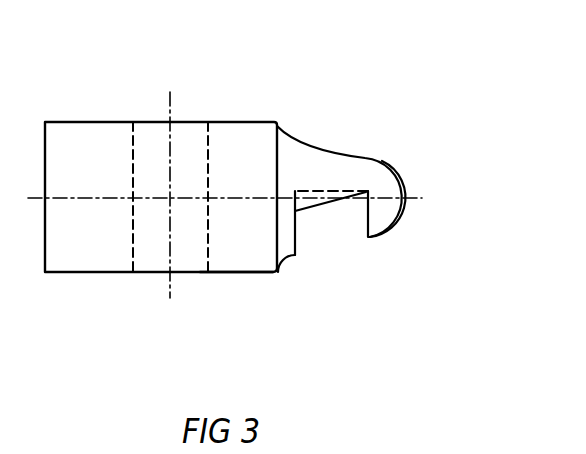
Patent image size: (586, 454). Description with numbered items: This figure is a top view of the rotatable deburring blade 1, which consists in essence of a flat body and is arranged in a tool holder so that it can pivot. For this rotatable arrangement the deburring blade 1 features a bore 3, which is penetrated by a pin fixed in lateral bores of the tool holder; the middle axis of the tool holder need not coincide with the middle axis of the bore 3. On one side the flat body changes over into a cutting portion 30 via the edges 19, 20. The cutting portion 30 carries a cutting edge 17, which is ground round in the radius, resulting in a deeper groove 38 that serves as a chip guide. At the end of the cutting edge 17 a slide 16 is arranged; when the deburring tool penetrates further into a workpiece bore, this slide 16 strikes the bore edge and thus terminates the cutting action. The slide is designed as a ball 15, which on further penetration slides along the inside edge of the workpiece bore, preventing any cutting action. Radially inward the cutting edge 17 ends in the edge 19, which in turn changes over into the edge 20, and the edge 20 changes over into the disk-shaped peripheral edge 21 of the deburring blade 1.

The deburring blade 1 is at (88, 246).
The bore 3 is at (191, 245).
The ball 15 is at (404, 222).
The slide 16 is at (405, 183).
The cutting edge 17 is at (320, 203).
The edge 19 is at (293, 257).
The edge 20 is at (276, 233).
The disk-shaped peripheral edge 21 is at (234, 274).
The cutting portion 30 is at (361, 232).
The groove 38 is at (313, 188).